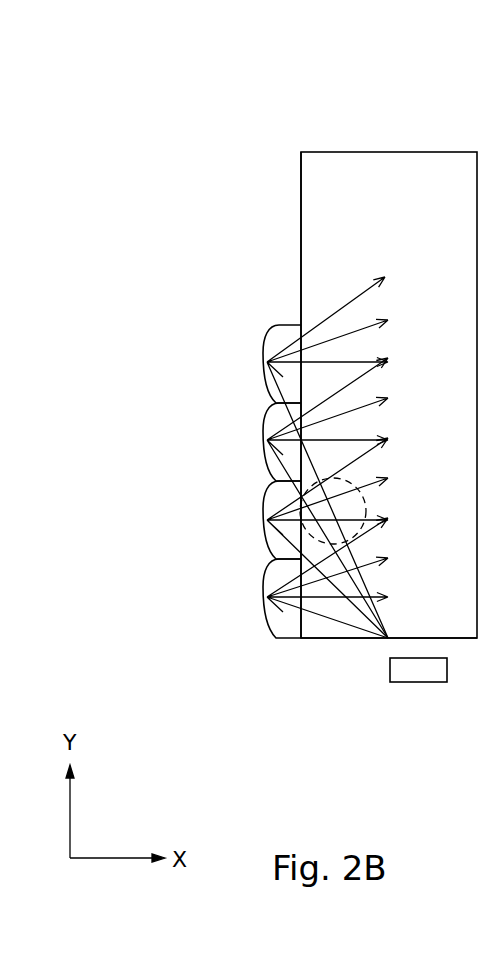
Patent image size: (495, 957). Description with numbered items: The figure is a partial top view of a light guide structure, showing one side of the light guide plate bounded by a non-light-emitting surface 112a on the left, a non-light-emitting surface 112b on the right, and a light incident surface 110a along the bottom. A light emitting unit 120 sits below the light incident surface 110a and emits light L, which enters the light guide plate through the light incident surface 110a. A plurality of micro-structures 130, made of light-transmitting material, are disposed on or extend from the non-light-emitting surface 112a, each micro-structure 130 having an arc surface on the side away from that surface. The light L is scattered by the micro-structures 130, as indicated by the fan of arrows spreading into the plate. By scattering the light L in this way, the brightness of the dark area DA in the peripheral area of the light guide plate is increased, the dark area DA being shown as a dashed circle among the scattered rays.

The non-light-emitting surface 112a is at (301, 203).
The non-light-emitting surface 112b is at (388, 152).
The light incident surface 110a is at (330, 640).
The micro-structure 130 is at (264, 343).
The light L is at (338, 305).
The dark area DA is at (272, 541).
The light emitting unit 120 is at (419, 670).